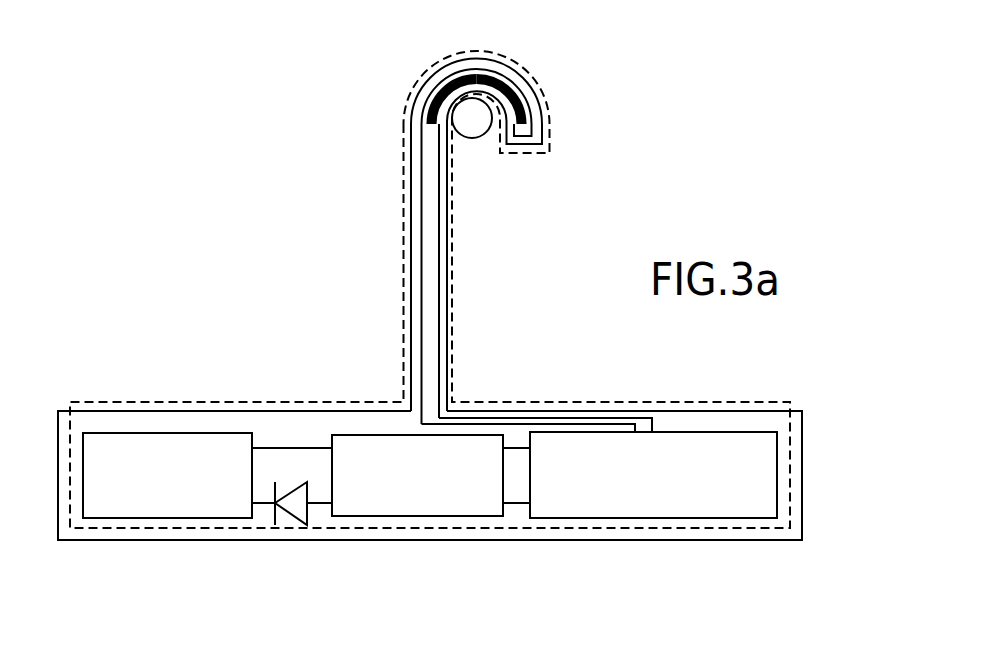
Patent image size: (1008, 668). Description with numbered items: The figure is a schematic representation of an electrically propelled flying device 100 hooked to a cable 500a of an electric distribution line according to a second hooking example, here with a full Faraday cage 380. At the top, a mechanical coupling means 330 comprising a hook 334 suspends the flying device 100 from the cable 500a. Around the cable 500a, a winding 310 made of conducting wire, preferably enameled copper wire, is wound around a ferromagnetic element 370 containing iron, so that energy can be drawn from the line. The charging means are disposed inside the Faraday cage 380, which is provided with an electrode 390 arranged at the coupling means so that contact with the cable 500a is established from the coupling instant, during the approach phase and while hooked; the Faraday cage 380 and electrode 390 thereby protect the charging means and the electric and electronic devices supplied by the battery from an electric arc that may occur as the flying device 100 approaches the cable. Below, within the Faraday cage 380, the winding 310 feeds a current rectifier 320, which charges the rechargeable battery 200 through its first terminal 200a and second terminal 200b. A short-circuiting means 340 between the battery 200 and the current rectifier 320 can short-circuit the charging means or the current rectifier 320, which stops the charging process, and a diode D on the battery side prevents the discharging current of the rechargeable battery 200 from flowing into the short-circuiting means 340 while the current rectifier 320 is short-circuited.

The electrically propelled flying device 100 is at (109, 197).
The rechargeable battery 200 is at (157, 505).
The first terminal 200a is at (265, 503).
The second terminal 200b is at (292, 447).
The diode D is at (293, 505).
The short-circuiting means 340 is at (417, 506).
The current rectifier 320 is at (707, 507).
The Faraday cage 380 is at (791, 450).
The hook 334 is at (542, 133).
The coupling means 330 is at (428, 84).
The winding 310 is at (425, 120).
The ferromagnetic element 370 is at (518, 102).
The electrode 390 is at (453, 128).
The cable 500a is at (472, 138).